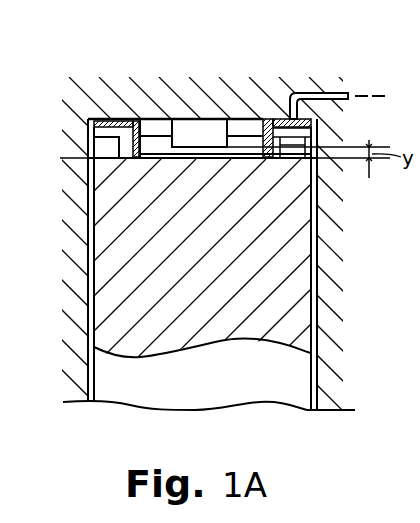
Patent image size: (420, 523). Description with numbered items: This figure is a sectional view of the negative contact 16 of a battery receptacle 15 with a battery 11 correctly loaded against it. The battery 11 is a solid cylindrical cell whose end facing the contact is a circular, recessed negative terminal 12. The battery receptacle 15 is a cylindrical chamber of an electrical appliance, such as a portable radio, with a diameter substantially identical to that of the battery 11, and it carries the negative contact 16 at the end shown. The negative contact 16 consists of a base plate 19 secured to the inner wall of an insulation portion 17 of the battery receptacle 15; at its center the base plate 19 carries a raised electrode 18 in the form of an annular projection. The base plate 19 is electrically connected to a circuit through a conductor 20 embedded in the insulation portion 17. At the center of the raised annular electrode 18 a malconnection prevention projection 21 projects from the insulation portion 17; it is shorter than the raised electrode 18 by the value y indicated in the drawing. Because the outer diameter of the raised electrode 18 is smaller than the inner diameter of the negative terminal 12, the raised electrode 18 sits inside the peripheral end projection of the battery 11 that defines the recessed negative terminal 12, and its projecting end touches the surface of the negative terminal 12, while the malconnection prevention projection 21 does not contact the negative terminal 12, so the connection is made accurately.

The battery 11 is at (274, 233).
The negative terminal 12 is at (150, 158).
The battery receptacle 15 is at (287, 378).
The negative contact 16 is at (137, 112).
The insulation portion 17 is at (215, 140).
The raised electrode 18 is at (118, 151).
The base plate 19 is at (108, 116).
The conductor 20 is at (330, 88).
The malconnection prevention projection 21 is at (218, 128).